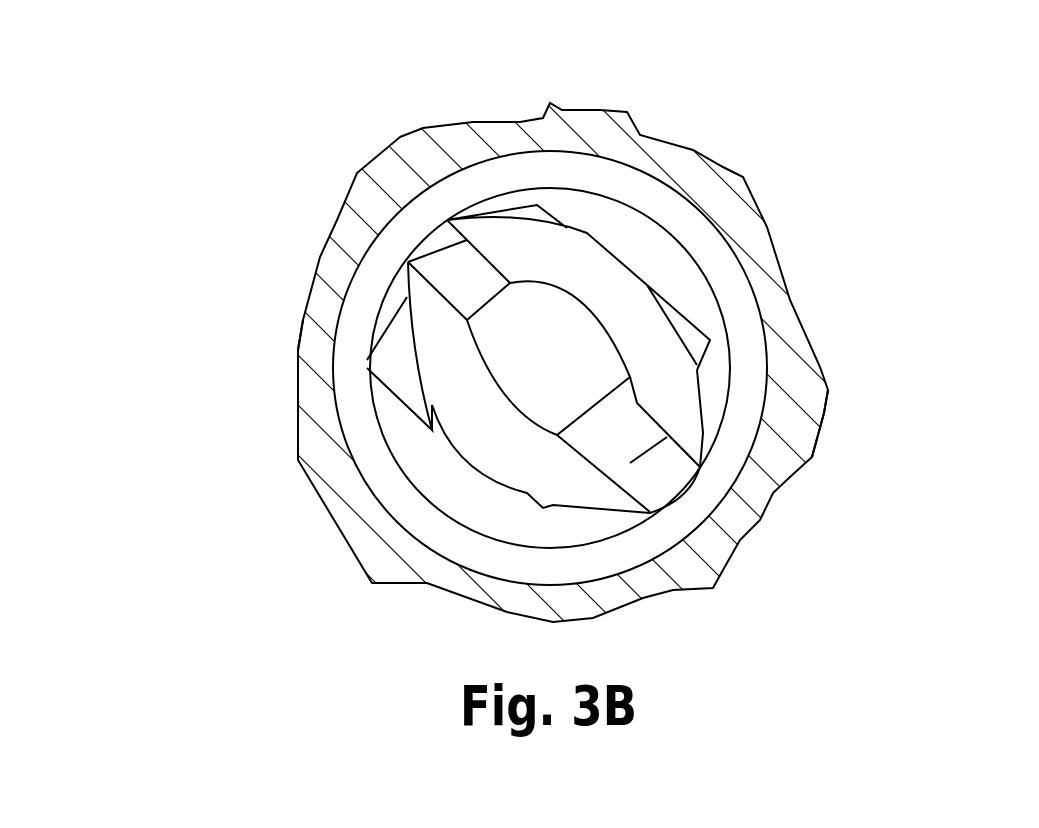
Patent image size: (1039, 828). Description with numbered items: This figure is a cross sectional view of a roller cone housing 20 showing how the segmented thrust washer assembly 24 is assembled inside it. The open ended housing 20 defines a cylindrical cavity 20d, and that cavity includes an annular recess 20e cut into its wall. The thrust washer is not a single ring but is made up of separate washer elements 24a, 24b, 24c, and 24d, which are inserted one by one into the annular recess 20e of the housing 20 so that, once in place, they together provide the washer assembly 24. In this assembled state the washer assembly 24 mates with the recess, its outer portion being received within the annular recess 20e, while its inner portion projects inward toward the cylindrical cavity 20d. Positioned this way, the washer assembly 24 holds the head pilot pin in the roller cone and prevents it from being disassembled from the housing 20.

The housing 20 is at (724, 166).
The cylindrical cavity 20d is at (382, 433).
The annular recess 20e is at (770, 392).
The segmented thrust washer assembly 24 is at (384, 243).
The washer element 24a is at (507, 453).
The washer element 24b is at (574, 268).
The washer element 24c is at (385, 360).
The washer element 24d is at (610, 433).